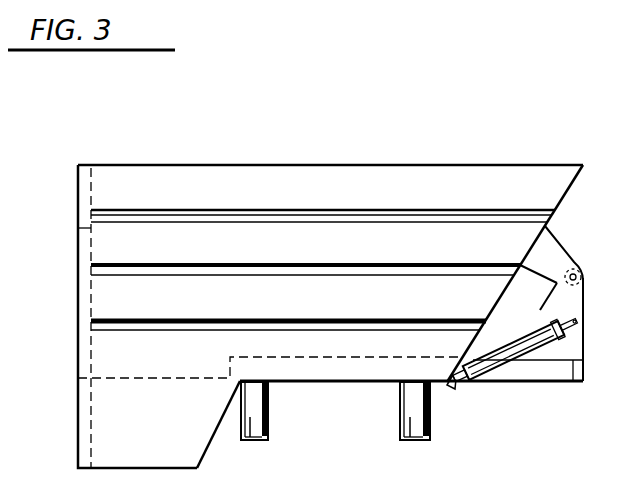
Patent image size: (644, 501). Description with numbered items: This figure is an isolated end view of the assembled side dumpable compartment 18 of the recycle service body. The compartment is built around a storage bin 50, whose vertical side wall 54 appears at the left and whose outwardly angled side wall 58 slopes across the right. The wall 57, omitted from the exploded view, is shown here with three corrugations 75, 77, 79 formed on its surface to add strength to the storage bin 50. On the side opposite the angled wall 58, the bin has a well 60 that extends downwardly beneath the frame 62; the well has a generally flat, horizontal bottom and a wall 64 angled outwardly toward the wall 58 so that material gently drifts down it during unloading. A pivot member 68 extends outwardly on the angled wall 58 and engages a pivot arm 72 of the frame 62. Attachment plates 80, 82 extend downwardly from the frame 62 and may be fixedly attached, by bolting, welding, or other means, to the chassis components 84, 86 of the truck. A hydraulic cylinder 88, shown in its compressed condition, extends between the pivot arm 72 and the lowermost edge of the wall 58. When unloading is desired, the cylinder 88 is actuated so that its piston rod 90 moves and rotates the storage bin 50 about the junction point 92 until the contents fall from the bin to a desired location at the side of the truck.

The side dumpable compartment 18 is at (330, 133).
The storage bin 50 is at (470, 158).
The vertical side wall 54 is at (78, 300).
The wall 57 is at (330, 256).
The outwardly angled side wall 58 is at (568, 195).
The well 60 is at (170, 430).
The frame 62 is at (538, 383).
The angled well wall 64 is at (207, 455).
The pivot member 68 is at (577, 266).
The pivot arm 72 is at (548, 333).
The corrugation 75 is at (455, 213).
The corrugation 77 is at (417, 268).
The corrugation 79 is at (382, 322).
The attachment plate 80 is at (442, 429).
The attachment plate 82 is at (281, 429).
The chassis component 84 is at (410, 440).
The chassis component 86 is at (250, 437).
The hydraulic cylinder 88 is at (560, 345).
The piston rod 90 is at (467, 383).
The junction point 92 is at (583, 268).